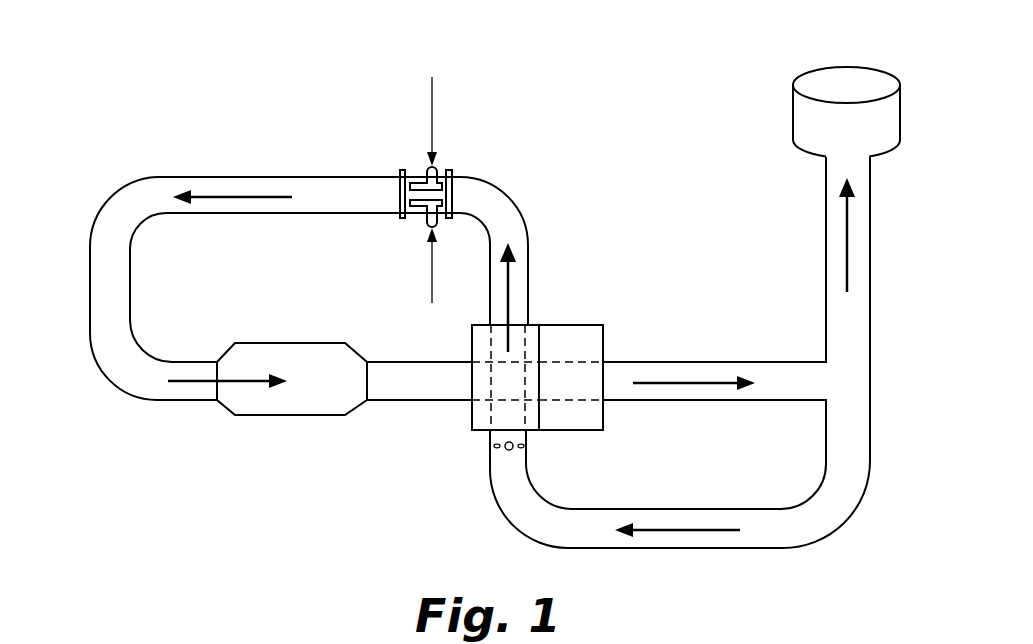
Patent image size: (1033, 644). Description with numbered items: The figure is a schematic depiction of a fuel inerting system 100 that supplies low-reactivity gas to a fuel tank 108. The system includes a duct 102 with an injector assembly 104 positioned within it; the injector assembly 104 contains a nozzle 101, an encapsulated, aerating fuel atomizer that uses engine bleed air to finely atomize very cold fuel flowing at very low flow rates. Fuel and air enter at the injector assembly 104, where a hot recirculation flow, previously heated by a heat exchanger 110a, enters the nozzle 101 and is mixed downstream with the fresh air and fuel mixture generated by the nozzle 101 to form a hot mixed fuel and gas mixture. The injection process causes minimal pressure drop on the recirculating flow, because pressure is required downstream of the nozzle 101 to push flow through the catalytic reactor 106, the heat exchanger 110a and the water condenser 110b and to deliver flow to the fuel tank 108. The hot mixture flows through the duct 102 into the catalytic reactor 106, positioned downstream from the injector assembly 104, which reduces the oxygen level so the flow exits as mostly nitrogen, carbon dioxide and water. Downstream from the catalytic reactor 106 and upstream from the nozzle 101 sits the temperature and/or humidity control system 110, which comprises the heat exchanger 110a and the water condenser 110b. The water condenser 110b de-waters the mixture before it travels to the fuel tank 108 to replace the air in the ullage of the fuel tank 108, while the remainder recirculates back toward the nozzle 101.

The fuel inerting system 100 is at (126, 144).
The nozzle 101 is at (458, 175).
The duct 102 is at (528, 202).
The injector assembly 104 is at (409, 167).
The catalytic reactor 106 is at (292, 402).
The fuel tank 108 is at (795, 122).
The temperature and/or humidity control system 110 is at (574, 313).
The heat exchanger 110a is at (468, 432).
The water condenser 110b is at (607, 432).